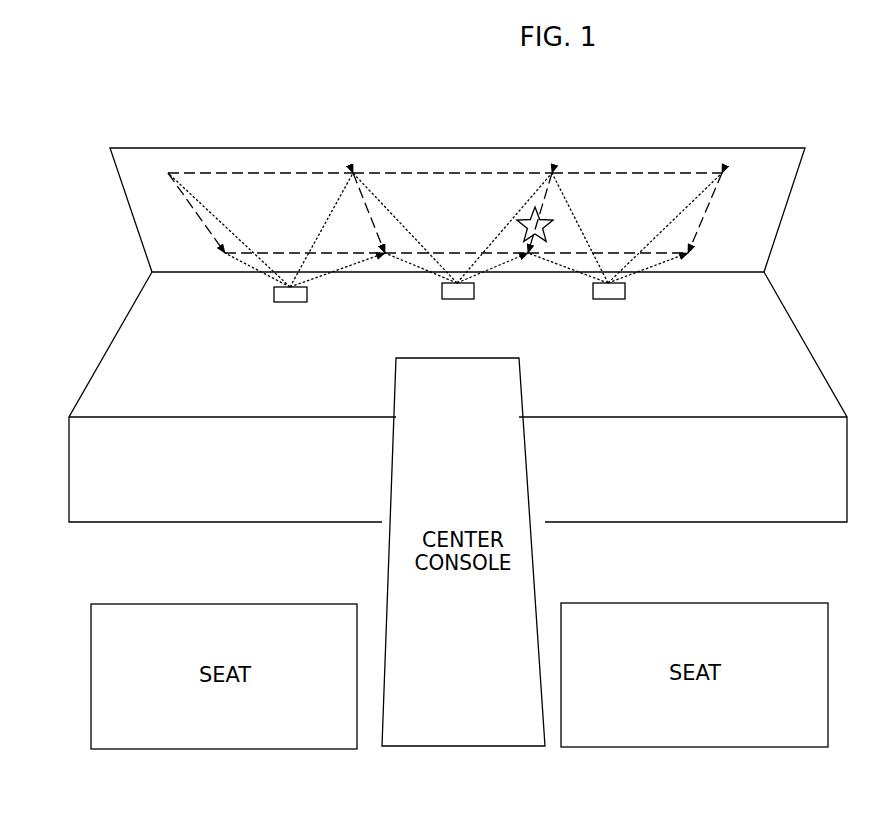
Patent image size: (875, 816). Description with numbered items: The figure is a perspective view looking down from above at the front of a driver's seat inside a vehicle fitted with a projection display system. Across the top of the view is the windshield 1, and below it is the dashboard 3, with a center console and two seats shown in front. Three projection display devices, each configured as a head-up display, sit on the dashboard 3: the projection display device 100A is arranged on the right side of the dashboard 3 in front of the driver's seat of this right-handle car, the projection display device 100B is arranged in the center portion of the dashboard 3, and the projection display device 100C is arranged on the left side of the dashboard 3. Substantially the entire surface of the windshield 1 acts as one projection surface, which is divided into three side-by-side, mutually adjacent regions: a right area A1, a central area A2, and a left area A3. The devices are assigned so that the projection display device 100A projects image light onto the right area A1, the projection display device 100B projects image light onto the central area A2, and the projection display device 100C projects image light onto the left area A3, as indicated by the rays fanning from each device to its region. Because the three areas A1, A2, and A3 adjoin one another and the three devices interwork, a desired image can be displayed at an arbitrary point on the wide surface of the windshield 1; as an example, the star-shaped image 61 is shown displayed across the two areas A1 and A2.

The windshield 1 is at (778, 147).
The dashboard 3 is at (780, 300).
The image 61 is at (532, 212).
The projection display device 100A is at (608, 299).
The projection display device 100B is at (457, 299).
The projection display device 100C is at (291, 302).
The right area A1 is at (635, 192).
The central area A2 is at (450, 200).
The left area A3 is at (273, 202).